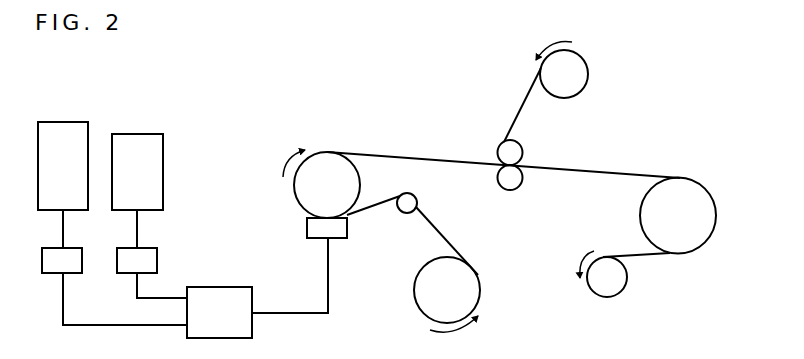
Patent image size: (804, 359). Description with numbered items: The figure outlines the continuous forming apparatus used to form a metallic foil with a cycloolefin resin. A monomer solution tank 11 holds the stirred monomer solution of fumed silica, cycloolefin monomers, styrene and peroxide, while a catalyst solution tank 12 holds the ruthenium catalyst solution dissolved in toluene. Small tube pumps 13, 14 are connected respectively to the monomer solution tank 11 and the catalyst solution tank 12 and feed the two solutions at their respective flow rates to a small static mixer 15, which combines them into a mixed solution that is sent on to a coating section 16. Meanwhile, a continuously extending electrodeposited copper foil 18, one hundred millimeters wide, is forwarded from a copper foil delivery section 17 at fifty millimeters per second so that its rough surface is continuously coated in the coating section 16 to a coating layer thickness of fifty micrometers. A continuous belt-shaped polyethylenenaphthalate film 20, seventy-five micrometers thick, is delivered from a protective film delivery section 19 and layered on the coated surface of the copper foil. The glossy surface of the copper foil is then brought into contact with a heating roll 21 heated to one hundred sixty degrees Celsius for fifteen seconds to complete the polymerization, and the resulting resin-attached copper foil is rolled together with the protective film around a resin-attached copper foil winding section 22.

The monomer solution tank 11 is at (61, 122).
The catalyst solution tank 12 is at (136, 134).
The small tube pump 13 is at (86, 237).
The small tube pump 14 is at (161, 237).
The small static mixer 15 is at (215, 287).
The coating section 16 is at (307, 228).
The copper foil delivery section 17 is at (480, 285).
The electrodeposited copper foil 18 is at (435, 225).
The protective film delivery section 19 is at (581, 76).
The polyethylenenaphthalate film 20 is at (520, 101).
The heating roll 21 is at (707, 210).
The resin-attached copper foil winding section 22 is at (627, 275).